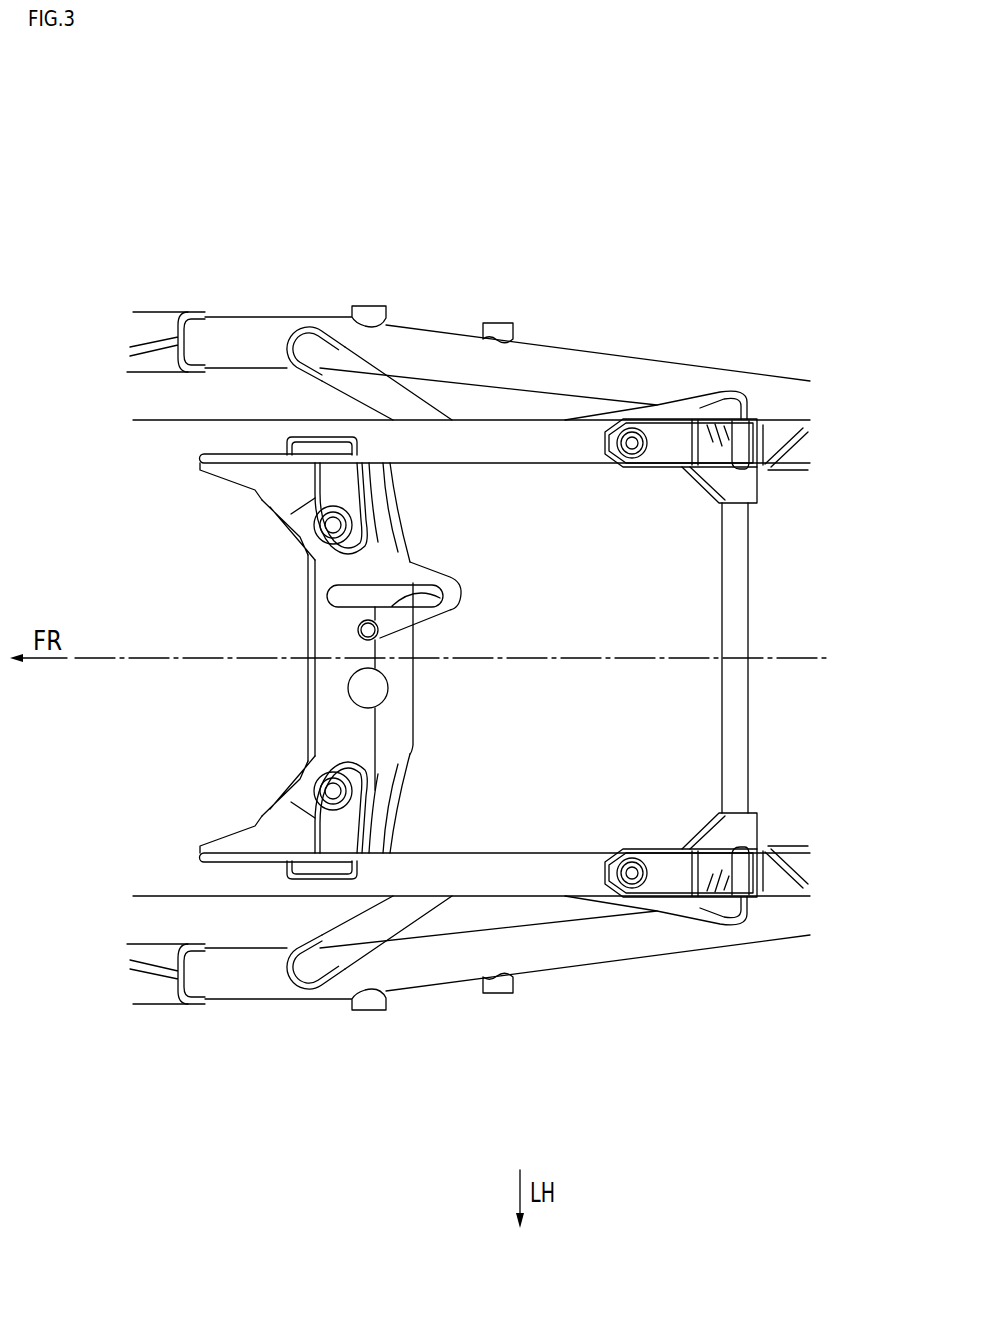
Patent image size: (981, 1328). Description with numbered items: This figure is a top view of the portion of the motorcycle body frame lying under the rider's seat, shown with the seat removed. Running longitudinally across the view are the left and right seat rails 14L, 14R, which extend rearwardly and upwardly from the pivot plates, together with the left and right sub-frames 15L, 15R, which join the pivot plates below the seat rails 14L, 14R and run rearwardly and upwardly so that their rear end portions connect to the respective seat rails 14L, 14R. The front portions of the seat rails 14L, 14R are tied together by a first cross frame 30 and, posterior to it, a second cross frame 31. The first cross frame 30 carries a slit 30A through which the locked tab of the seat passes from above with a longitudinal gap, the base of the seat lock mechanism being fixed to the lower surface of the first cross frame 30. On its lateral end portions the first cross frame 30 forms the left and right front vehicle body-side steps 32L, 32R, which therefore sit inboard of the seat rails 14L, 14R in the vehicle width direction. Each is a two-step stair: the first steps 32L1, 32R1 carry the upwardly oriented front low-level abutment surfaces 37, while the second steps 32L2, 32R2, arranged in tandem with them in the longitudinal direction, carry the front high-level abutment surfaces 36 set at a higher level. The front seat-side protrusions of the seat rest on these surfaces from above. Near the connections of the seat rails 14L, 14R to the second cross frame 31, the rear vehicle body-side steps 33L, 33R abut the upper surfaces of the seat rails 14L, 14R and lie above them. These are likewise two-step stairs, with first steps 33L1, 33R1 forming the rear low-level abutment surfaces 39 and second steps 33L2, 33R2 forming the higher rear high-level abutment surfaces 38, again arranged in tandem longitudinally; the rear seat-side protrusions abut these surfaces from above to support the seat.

The right seat rail 14R is at (494, 322).
The left seat rail 14L is at (498, 992).
The right sub-frame 15R is at (553, 352).
The left sub-frame 15L is at (553, 968).
The first cross frame 30 is at (332, 716).
The slit 30A is at (462, 600).
The second cross frame 31 is at (720, 712).
The right front vehicle body-side step 32R is at (370, 548).
The first step of right front vehicle body-side step 32R1 is at (370, 465).
The second step of right front vehicle body-side step 32R2 is at (283, 477).
The left front vehicle body-side step 32L is at (371, 765).
The first step of left front vehicle body-side step 32L1 is at (368, 850).
The second step of left front vehicle body-side step 32L2 is at (283, 840).
The right rear vehicle body-side step 33R is at (684, 495).
The first step of right rear vehicle body-side step 33R1 is at (745, 395).
The second step of right rear vehicle body-side step 33R2 is at (672, 443).
The left rear vehicle body-side step 33L is at (642, 838).
The first step of left rear vehicle body-side step 33L1 is at (740, 928).
The second step of left rear vehicle body-side step 33L2 is at (670, 873).
The front high-level abutment surface 36 is at (275, 478).
The front low-level abutment surface 37 is at (338, 480).
The rear high-level abutment surface 38 is at (657, 432).
The rear low-level abutment surface 39 is at (710, 440).